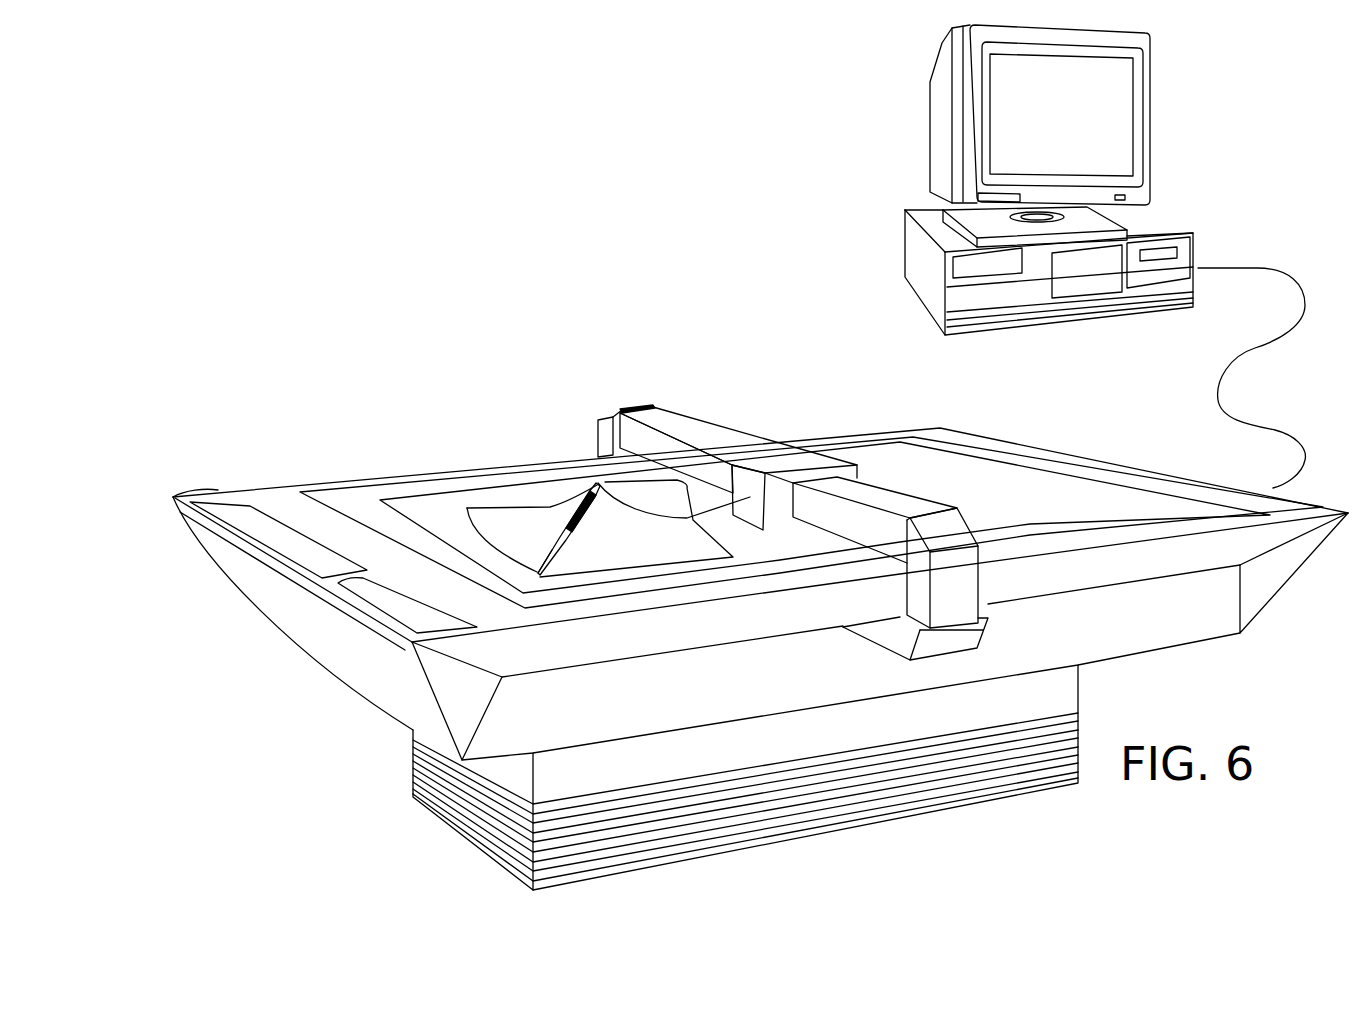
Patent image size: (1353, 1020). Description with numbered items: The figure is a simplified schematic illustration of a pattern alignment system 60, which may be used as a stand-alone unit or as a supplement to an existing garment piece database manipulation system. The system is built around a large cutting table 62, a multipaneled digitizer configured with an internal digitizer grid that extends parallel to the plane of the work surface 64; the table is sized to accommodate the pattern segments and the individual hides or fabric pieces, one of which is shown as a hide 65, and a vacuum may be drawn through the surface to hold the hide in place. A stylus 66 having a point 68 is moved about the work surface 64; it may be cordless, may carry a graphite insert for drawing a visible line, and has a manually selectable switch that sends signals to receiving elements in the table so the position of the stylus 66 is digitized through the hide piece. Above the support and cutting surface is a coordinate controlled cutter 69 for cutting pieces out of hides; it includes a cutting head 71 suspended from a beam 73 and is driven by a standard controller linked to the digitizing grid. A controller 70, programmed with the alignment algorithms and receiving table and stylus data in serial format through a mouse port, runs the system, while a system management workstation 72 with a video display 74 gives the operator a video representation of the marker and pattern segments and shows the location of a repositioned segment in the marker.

The pattern alignment system 60 is at (548, 432).
The cutting table 62 is at (830, 736).
The work surface 64 is at (1000, 480).
The hide 65 is at (707, 540).
The stylus 66 is at (575, 518).
The point 68 is at (537, 573).
The coordinate controlled cutter 69 is at (763, 438).
The controller 70 is at (1050, 256).
The cutting head 71 is at (827, 461).
The system management workstation 72 is at (893, 240).
The beam 73 is at (713, 447).
The video display 74 is at (940, 148).